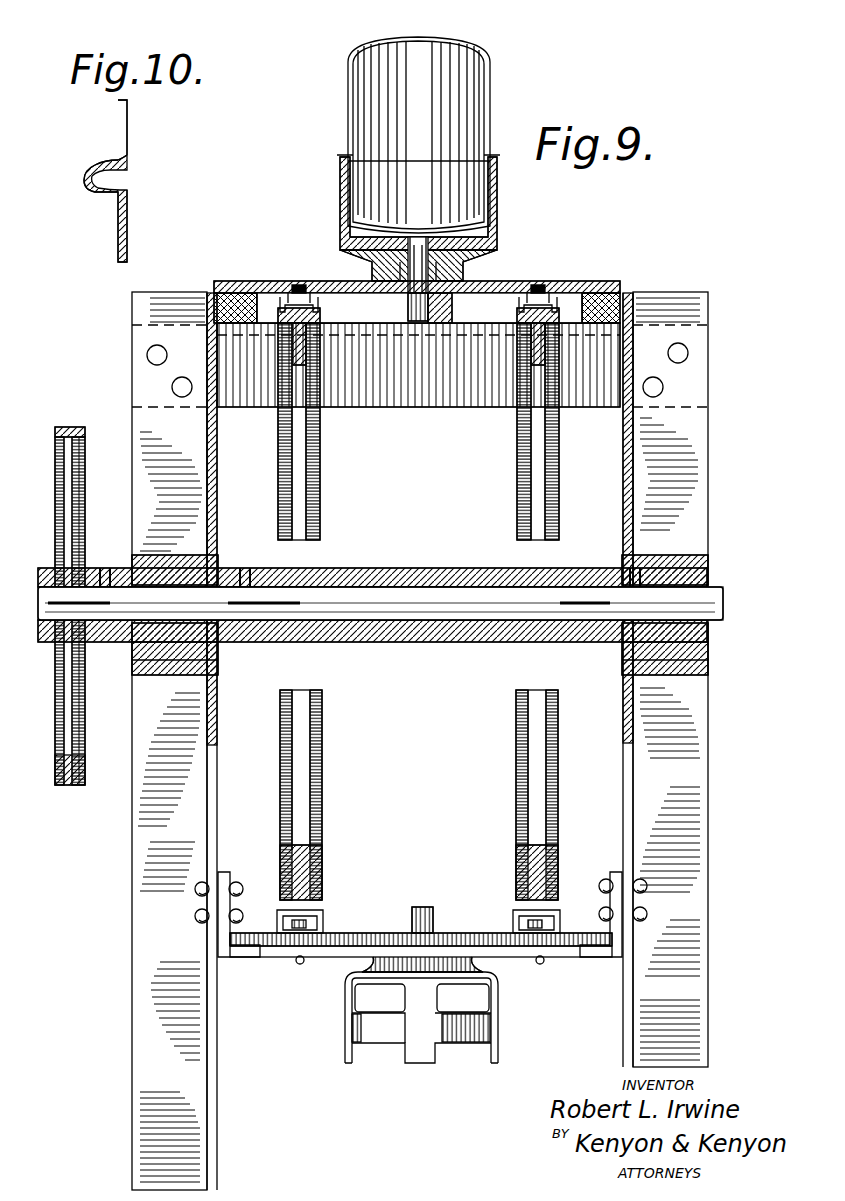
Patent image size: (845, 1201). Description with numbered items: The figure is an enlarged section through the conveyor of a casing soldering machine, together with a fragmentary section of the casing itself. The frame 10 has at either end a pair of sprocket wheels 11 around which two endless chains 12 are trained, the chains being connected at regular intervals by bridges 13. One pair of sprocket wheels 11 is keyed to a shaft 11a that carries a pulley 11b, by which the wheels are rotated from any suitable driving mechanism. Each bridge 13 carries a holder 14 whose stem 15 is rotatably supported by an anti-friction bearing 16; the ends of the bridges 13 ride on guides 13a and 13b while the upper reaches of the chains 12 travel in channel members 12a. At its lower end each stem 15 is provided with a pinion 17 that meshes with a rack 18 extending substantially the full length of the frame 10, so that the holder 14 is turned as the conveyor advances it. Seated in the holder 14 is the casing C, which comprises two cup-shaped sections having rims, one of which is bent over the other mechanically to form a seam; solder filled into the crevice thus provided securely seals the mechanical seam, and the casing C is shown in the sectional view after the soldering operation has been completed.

In FIG. 10, the casing C is at (128, 128).
In FIG. 9, the casing C is at (482, 112).
In FIG. 9, the frame 10 is at (155, 886).
In FIG. 9, the sprocket wheels 11 is at (290, 814).
In FIG. 9, the shaft 11a is at (430, 602).
In FIG. 9, the pulley 11b is at (56, 488).
In FIG. 9, the endless chains 12 is at (322, 918).
In FIG. 9, the channel members 12a is at (310, 318).
In FIG. 9, the bridges 13 is at (568, 281).
In FIG. 9, the guide 13a is at (232, 298).
In FIG. 9, the guide 13b is at (605, 302).
In FIG. 9, the holder 14 is at (497, 195).
In FIG. 9, the stem 15 is at (430, 250).
In FIG. 9, the anti-friction bearing 16 is at (445, 276).
In FIG. 9, the pinion 17 is at (408, 308).
In FIG. 9, the rack 18 is at (452, 310).